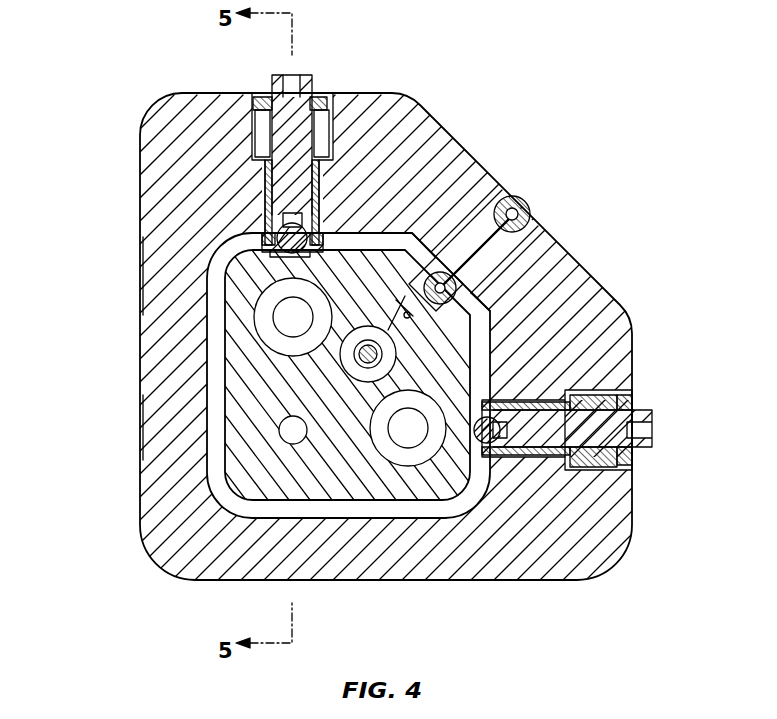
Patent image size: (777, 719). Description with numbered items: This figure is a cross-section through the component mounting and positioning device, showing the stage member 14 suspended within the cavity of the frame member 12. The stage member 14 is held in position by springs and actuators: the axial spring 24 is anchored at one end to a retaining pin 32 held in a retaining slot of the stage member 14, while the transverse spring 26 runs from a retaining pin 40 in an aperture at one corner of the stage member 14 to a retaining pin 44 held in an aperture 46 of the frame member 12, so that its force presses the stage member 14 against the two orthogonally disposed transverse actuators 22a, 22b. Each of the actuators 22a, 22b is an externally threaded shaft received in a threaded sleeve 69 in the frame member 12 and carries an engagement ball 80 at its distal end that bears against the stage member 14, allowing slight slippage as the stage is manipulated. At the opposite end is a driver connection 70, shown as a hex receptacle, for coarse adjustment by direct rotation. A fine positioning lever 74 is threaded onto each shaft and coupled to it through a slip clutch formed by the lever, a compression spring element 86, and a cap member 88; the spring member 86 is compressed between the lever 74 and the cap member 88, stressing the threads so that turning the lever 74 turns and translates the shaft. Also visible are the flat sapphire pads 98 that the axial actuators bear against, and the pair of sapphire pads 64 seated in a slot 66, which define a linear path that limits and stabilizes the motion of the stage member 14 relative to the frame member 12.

The frame member 12 is at (172, 540).
The stage member 14 is at (237, 393).
The axial spring 24 is at (390, 350).
The retaining pin 32 is at (363, 367).
The sapphire pads 98 is at (262, 327).
The slot 66 is at (390, 240).
The transverse spring 26 is at (537, 232).
The aperture 46 is at (393, 335).
The retaining pin 44 is at (522, 200).
The retaining pin 40 is at (458, 288).
The sapphire pads 64 is at (452, 298).
The transverse actuator 22a is at (313, 86).
The transverse actuator 22b is at (515, 463).
The driver connection 70 is at (293, 76).
The fine positioning lever 74 is at (330, 122).
The cap member 88 is at (270, 106).
The compression spring element 86 is at (264, 100).
The threaded sleeves 69 is at (263, 187).
The engagement ball 80 is at (263, 243).